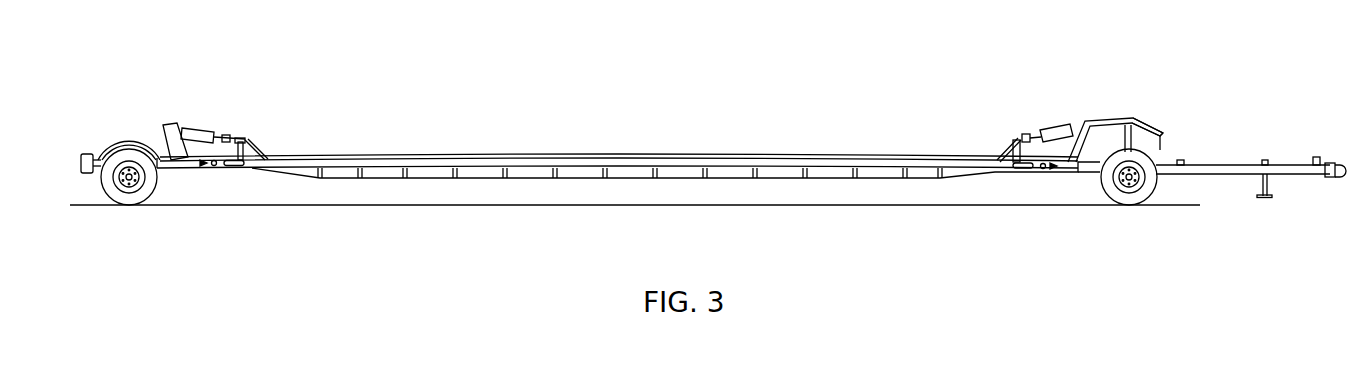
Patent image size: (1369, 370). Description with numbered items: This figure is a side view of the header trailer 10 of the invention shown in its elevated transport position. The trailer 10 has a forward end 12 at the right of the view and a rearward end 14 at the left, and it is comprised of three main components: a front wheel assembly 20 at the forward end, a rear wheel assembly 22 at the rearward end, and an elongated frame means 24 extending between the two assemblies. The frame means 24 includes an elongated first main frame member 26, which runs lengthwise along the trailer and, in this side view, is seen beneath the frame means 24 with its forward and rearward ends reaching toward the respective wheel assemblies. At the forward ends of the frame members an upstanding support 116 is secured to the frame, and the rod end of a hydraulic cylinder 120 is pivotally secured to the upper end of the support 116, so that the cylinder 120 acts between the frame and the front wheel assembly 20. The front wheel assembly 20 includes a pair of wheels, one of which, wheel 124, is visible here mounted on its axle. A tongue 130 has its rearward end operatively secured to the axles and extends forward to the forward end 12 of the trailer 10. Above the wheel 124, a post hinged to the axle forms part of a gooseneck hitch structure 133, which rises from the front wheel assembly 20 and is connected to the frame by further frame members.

The header trailer 10 is at (631, 108).
The forward end 12 is at (1350, 162).
The rearward end 14 is at (63, 162).
The front wheel assembly 20 is at (1097, 105).
The rear wheel assembly 22 is at (145, 116).
The frame means 24 is at (550, 138).
The first main frame member 26 is at (438, 155).
The upstanding support 116 is at (1000, 156).
The hydraulic cylinder 120 is at (1043, 128).
The wheel 124 is at (1150, 190).
The tongue 130 is at (1226, 163).
The gooseneck hitch structure 133 is at (1130, 118).